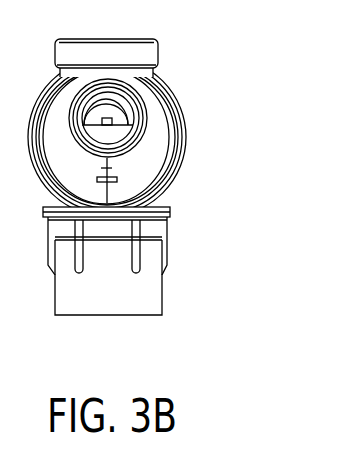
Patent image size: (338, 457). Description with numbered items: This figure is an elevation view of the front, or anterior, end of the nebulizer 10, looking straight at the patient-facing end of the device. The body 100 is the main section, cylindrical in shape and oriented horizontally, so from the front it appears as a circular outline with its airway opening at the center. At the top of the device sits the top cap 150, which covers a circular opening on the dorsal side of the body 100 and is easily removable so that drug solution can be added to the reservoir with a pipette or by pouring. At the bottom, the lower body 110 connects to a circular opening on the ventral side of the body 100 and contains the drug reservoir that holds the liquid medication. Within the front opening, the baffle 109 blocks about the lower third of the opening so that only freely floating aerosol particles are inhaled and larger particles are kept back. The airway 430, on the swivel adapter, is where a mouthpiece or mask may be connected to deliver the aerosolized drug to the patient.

The nebulizer 10 is at (160, 178).
The body 100 is at (132, 137).
The baffle 109 is at (108, 134).
The lower body 110 is at (152, 300).
The top cap 150 is at (157, 50).
The airway 430 is at (147, 118).